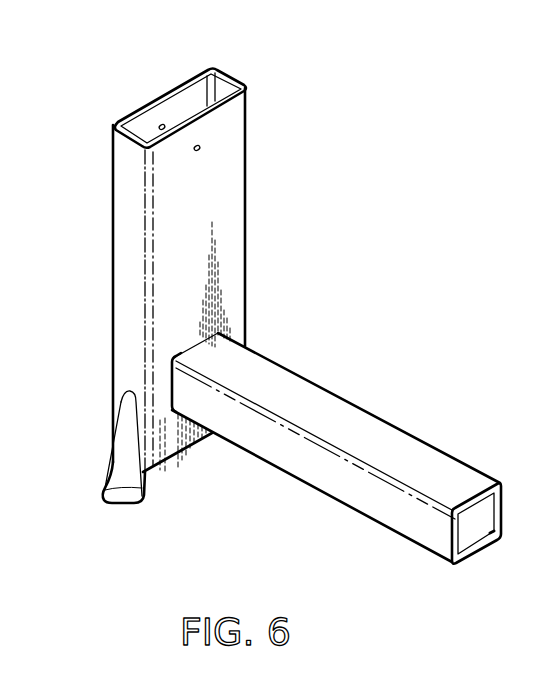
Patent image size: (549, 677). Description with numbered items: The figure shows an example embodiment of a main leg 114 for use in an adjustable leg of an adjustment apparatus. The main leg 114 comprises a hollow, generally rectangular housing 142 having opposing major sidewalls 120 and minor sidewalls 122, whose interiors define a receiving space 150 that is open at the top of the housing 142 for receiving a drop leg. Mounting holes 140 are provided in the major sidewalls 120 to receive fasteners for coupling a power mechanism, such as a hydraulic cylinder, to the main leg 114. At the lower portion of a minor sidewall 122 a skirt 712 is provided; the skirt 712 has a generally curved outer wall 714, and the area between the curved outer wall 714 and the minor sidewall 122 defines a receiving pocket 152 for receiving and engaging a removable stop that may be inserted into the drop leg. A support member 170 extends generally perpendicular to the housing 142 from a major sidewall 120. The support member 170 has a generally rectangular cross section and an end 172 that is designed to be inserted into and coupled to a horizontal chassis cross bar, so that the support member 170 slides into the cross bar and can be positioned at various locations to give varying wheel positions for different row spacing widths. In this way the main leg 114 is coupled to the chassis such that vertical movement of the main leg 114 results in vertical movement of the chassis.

The main leg 114 is at (278, 318).
The major sidewall 120 is at (135, 117).
The minor sidewall 122 is at (222, 82).
The mounting holes 140 is at (162, 127).
The housing 142 is at (235, 232).
The receiving space 150 is at (194, 105).
The receiving pocket 152 is at (137, 475).
The support member 170 is at (343, 480).
The end 172 is at (470, 553).
The skirt 712 is at (118, 477).
The curved outer wall 714 is at (118, 505).